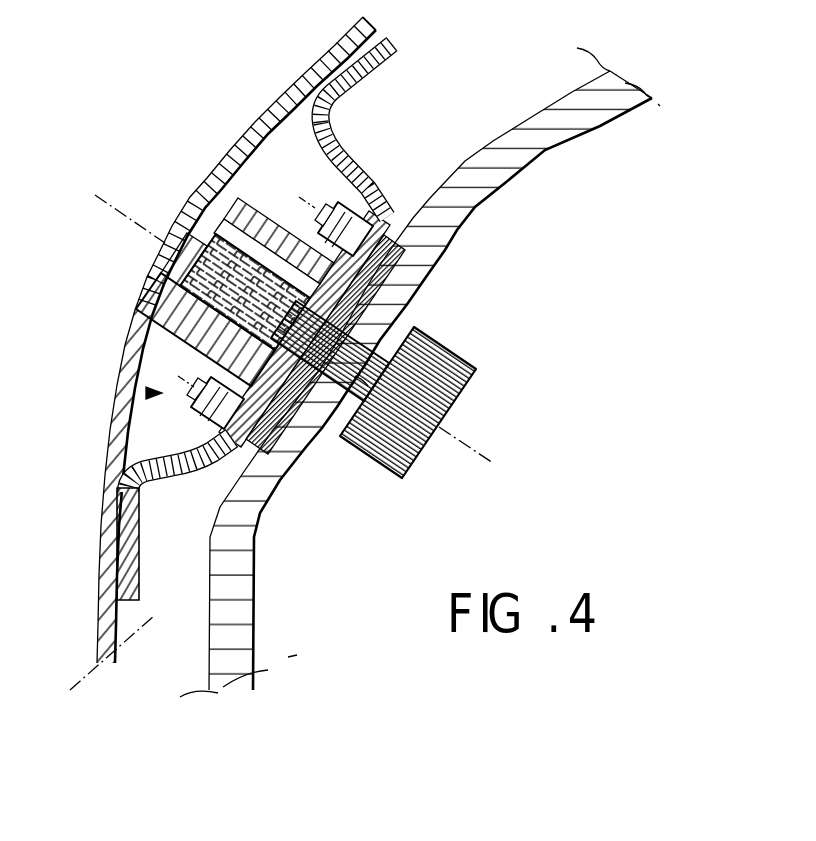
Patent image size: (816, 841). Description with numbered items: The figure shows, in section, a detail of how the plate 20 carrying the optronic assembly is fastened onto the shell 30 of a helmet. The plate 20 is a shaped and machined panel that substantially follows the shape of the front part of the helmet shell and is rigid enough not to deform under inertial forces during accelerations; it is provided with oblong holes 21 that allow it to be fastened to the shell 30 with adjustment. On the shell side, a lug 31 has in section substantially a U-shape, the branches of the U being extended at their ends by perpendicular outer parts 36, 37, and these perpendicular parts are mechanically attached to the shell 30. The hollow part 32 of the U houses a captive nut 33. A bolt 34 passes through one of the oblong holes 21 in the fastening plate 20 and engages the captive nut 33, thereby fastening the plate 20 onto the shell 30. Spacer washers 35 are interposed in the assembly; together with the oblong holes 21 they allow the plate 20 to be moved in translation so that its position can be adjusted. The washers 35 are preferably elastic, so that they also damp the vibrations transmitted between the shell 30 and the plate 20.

The plate 20 is at (558, 135).
The oblong holes 21 is at (350, 460).
The shell 30 is at (282, 97).
The lug 31 is at (357, 152).
The hollow part 32 is at (148, 393).
The captive nut 33 is at (268, 230).
The bolt 34 is at (442, 360).
The spacer washers 35 is at (392, 228).
The perpendicular outer part 36 is at (380, 67).
The perpendicular outer part 37 is at (140, 558).